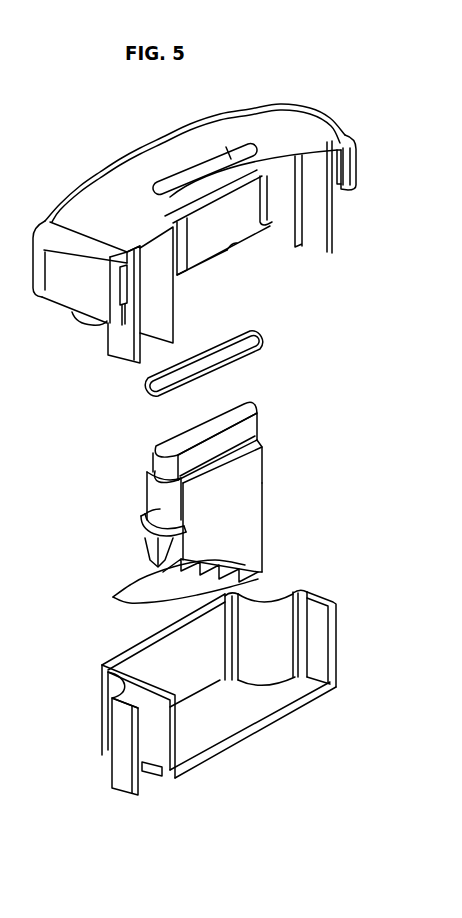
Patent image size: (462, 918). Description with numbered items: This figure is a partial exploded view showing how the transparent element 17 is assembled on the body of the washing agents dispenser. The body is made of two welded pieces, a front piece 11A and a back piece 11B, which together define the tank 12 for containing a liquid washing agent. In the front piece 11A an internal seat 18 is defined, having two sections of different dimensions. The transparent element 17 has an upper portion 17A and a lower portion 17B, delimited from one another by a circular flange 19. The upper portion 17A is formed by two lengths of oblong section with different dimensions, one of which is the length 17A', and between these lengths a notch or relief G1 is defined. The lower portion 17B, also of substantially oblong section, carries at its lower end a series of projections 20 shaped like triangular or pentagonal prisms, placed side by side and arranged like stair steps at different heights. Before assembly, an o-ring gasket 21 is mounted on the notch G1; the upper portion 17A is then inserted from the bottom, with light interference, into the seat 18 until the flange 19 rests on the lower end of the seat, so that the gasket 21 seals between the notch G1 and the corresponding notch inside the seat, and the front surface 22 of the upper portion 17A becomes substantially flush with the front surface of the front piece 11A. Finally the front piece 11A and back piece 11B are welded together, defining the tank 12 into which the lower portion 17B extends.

The front piece 11A is at (110, 188).
The back piece 11B is at (122, 779).
The tank 12 is at (230, 705).
The transparent element 17 is at (233, 502).
The upper portion 17A is at (218, 484).
The first length of oblong section 17A' is at (122, 467).
The lower portion 17B is at (232, 548).
The internal seat 18 is at (223, 225).
The circular flange 19 is at (143, 518).
The projections 20 is at (118, 597).
The o-ring gasket 21 is at (258, 335).
The front surface 22 is at (176, 445).
The notch G1 is at (263, 430).